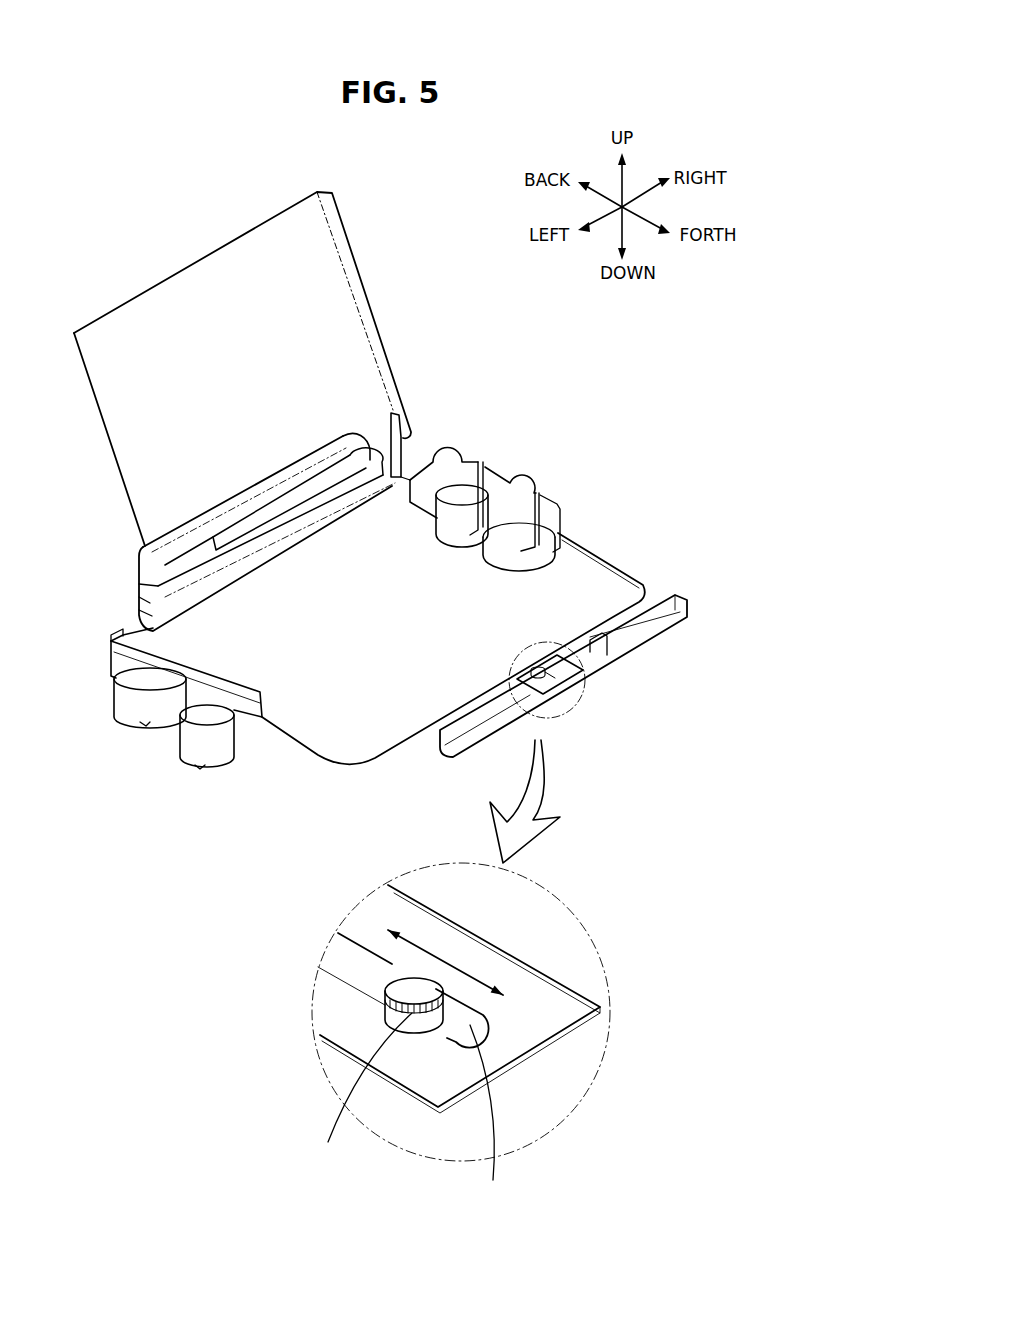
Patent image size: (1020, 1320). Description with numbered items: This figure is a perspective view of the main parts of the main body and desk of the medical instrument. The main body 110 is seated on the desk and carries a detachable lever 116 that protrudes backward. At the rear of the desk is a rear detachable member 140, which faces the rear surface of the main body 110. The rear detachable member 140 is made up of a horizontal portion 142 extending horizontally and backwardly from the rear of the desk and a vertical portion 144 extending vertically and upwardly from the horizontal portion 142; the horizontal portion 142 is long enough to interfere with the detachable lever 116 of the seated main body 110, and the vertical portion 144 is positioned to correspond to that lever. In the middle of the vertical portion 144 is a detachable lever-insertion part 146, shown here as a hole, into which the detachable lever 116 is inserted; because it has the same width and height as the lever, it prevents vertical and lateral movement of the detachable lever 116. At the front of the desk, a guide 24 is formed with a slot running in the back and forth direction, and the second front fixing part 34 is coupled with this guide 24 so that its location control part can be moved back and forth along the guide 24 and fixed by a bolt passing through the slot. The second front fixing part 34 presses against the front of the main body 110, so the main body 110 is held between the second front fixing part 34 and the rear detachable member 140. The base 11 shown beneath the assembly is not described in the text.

The main body 110 is at (406, 378).
The rear detachable member 140 is at (401, 432).
The detachable lever 116 is at (183, 534).
The detachable lever-insertion part 146 is at (150, 587).
The vertical portion 144 is at (143, 598).
The horizontal portion 142 is at (157, 618).
The base plate 11 is at (313, 727).
The second front fixing part 34 is at (608, 663).
The guide 24 is at (552, 680).